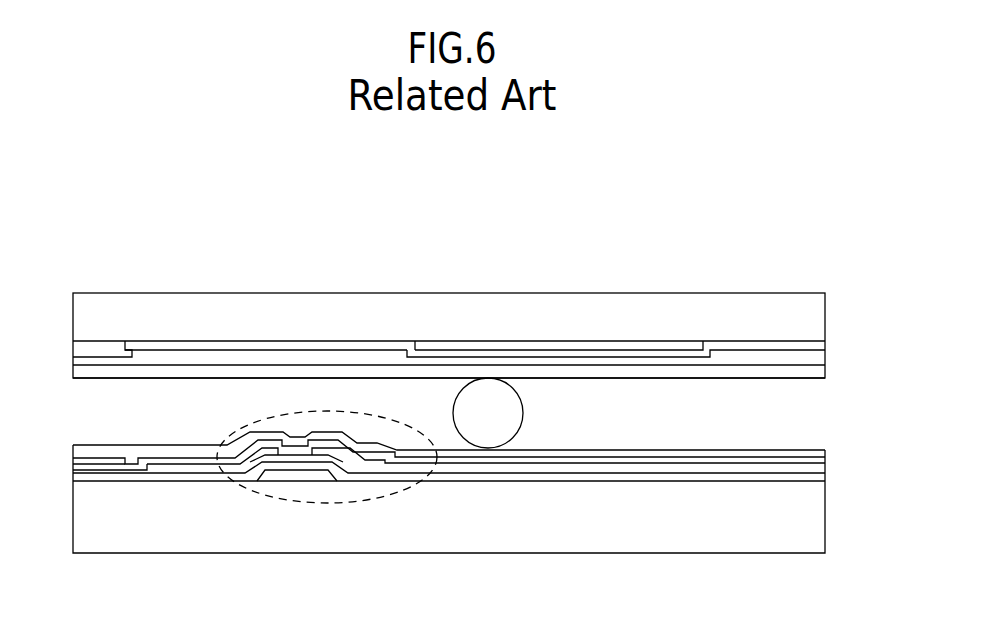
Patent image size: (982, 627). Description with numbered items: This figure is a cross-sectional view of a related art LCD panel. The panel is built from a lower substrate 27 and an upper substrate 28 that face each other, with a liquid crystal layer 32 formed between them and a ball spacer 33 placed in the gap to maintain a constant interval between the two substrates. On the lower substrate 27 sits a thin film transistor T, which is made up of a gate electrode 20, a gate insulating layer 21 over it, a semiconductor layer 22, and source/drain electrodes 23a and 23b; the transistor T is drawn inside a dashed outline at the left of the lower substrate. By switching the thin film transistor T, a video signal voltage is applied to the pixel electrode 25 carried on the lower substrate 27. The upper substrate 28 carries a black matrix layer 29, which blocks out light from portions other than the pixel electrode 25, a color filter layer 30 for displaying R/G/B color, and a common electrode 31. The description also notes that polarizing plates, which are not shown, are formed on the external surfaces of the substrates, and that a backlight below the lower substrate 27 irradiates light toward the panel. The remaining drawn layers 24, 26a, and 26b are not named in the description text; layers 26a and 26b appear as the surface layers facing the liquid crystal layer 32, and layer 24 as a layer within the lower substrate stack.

The gate electrode 20 is at (302, 480).
The gate insulating layer 21 is at (82, 478).
The semiconductor layer 22 is at (290, 475).
The source electrode 23a is at (205, 466).
The drain electrode 23b is at (390, 466).
The pixel electrode 24 is at (636, 483).
The pixel electrode 25 is at (826, 451).
The lower alignment layer 26a is at (713, 452).
The upper alignment layer 26b is at (573, 378).
The lower substrate 27 is at (822, 528).
The upper substrate 28 is at (822, 311).
The black matrix layer 29 is at (157, 346).
The color filter layer 30 is at (636, 350).
The common electrode 31 is at (346, 355).
The liquid crystal layer 32 is at (762, 406).
The ball spacer 33 is at (490, 396).
The thin film transistor T is at (338, 503).